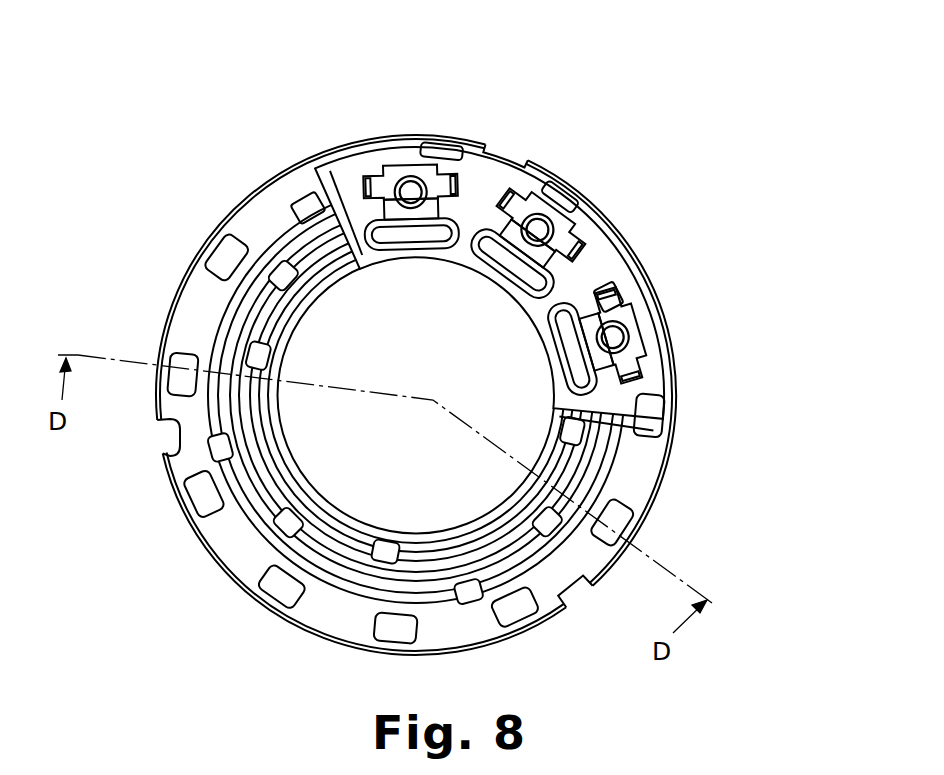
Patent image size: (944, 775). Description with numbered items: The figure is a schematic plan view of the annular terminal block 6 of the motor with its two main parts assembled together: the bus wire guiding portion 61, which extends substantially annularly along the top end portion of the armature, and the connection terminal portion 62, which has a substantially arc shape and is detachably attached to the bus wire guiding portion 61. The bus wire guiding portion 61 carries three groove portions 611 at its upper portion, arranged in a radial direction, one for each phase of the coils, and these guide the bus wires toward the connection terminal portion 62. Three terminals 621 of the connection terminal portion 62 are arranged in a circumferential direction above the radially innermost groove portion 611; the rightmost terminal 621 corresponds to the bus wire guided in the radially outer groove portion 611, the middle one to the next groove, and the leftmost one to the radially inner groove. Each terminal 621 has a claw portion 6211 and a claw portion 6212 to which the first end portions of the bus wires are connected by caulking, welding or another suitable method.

The annular terminal block 6 is at (458, 337).
The bus wire guiding portion 61 is at (421, 395).
The groove portion 611 is at (268, 450).
The connection terminal portion 62 is at (622, 415).
The terminal 621 is at (411, 177).
The claw portion 6211 is at (450, 222).
The claw portion 6212 is at (364, 224).